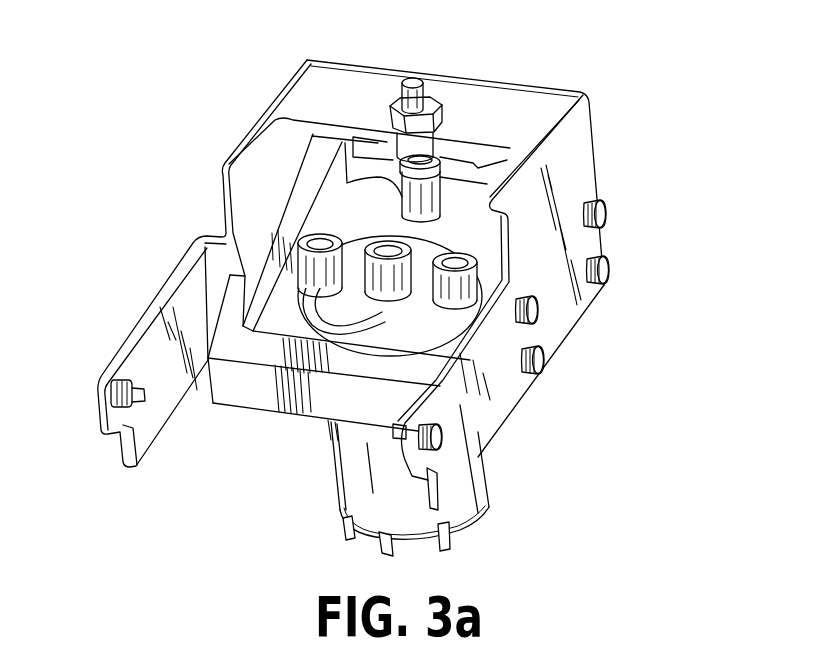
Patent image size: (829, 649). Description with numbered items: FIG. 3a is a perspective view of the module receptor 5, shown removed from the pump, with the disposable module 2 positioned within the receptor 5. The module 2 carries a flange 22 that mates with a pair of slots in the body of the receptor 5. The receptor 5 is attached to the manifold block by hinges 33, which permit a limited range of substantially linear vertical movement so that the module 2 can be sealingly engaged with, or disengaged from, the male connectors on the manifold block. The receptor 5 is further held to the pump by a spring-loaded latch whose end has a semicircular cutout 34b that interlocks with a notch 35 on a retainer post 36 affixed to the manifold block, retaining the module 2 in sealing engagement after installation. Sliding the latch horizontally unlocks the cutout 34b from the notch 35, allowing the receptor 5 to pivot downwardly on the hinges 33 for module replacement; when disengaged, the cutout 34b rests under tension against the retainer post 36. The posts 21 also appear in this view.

The module 2 is at (333, 462).
The module receptor 5 is at (680, 141).
The spacer posts 21 is at (443, 288).
The flange 22 is at (367, 215).
The hinges 33 is at (98, 393).
The semicircular cutout 34b is at (380, 122).
The notch 35 is at (428, 158).
The retainer post 36 is at (432, 203).